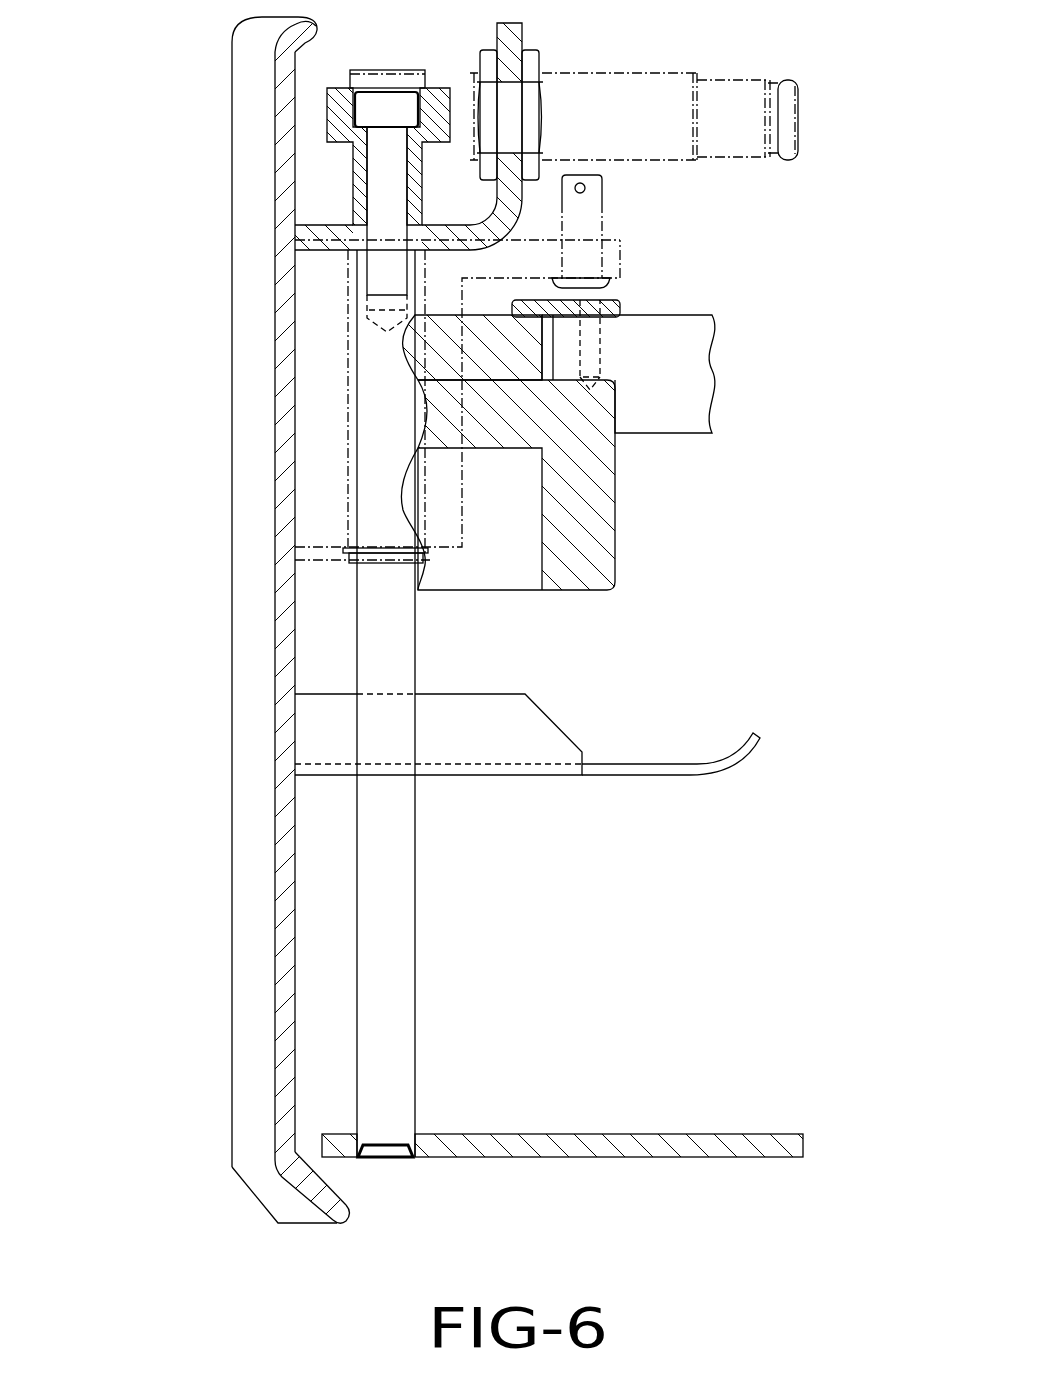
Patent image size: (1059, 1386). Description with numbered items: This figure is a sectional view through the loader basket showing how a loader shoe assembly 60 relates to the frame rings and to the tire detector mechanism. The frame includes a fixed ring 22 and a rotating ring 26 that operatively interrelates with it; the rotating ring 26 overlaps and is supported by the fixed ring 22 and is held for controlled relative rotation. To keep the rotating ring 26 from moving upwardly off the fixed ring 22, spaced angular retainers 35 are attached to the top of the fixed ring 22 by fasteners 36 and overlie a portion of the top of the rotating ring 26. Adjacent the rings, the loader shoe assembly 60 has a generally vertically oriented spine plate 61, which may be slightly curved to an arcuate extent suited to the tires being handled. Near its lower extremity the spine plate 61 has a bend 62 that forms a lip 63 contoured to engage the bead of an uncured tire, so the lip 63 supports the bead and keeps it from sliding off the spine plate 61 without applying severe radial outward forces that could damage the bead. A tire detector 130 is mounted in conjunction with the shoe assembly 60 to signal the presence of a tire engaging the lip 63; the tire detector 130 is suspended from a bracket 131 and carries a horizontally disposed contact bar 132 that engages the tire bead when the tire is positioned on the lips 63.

The fixed ring 22 is at (577, 505).
The rotating ring 26 is at (555, 387).
The angular retainers 35 is at (548, 306).
The fasteners 36 is at (600, 328).
The loader shoe assembly 60 is at (228, 795).
The spine plate 61 is at (287, 917).
The bend 62 is at (298, 1147).
The lip 63 is at (330, 1192).
The tire detector 130 is at (395, 658).
The bracket 131 is at (507, 45).
The contact bar 132 is at (692, 1142).